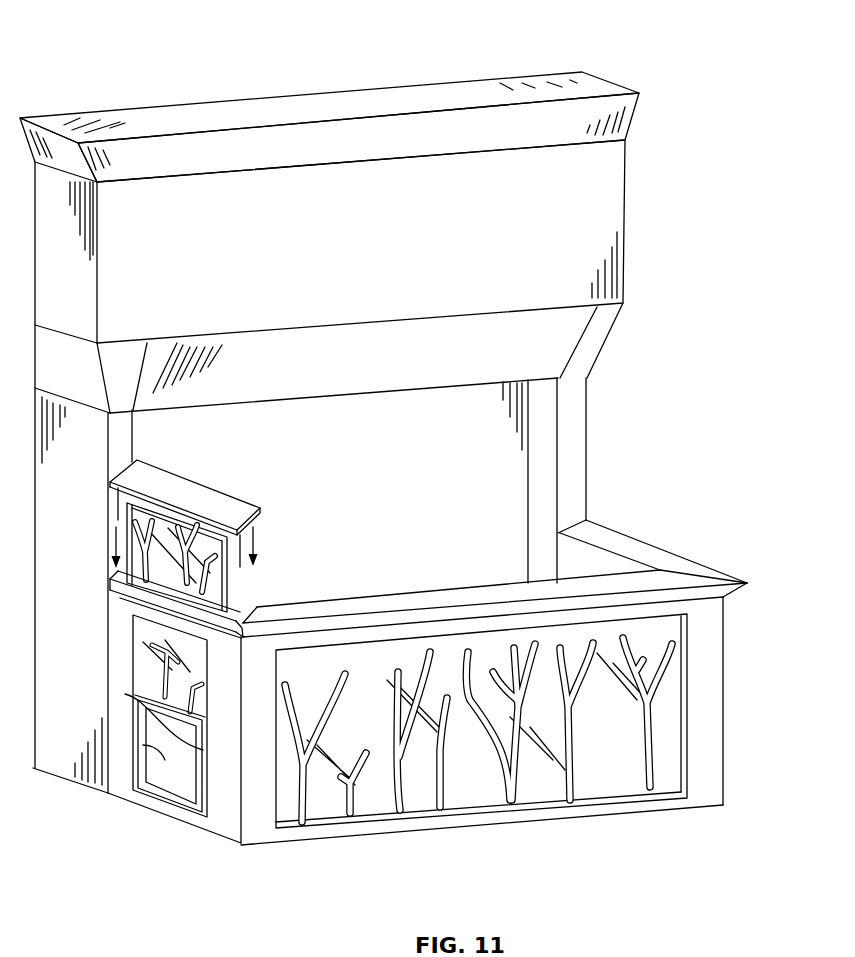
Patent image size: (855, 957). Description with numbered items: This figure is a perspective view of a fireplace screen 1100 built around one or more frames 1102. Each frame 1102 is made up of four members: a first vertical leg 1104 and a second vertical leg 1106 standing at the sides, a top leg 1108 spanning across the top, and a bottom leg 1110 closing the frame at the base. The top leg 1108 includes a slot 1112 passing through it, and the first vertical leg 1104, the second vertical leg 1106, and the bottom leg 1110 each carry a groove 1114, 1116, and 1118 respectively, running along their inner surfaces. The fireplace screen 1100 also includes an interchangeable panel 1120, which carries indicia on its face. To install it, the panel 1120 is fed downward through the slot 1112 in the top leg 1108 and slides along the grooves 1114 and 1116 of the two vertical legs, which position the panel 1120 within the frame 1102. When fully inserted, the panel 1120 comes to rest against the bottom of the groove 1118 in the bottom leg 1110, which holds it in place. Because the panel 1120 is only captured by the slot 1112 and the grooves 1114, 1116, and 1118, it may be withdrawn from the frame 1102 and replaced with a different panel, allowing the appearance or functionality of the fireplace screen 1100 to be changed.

The fireplace screen 1100 is at (158, 36).
The frame 1102 is at (116, 907).
The first vertical leg 1104 is at (123, 775).
The second vertical leg 1106 is at (222, 737).
The top leg 1108 is at (235, 610).
The bottom leg 1110 is at (145, 802).
The slot 1112 is at (250, 607).
The groove 1114 is at (150, 746).
The groove 1116 is at (125, 694).
The groove 1118 is at (202, 813).
The interchangeable panel 1120 is at (187, 533).